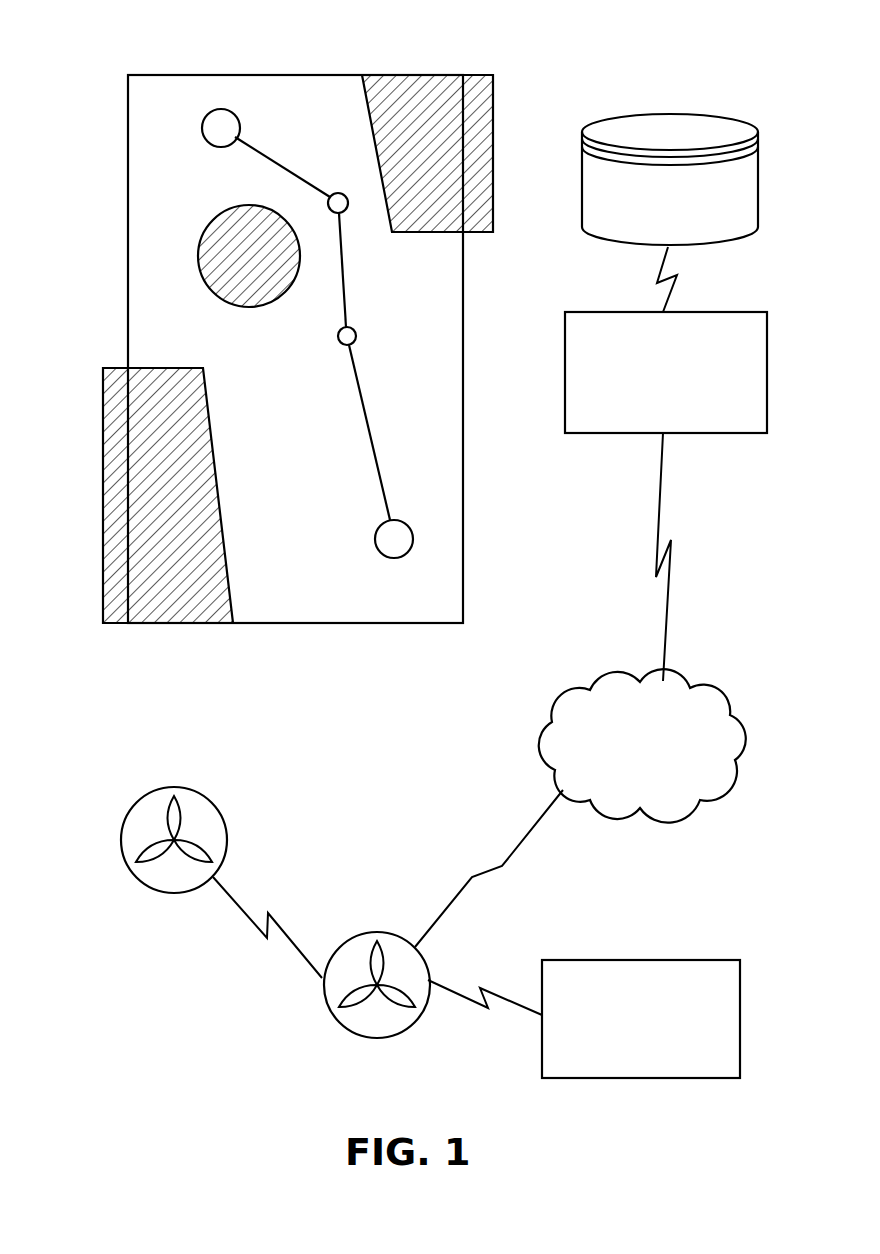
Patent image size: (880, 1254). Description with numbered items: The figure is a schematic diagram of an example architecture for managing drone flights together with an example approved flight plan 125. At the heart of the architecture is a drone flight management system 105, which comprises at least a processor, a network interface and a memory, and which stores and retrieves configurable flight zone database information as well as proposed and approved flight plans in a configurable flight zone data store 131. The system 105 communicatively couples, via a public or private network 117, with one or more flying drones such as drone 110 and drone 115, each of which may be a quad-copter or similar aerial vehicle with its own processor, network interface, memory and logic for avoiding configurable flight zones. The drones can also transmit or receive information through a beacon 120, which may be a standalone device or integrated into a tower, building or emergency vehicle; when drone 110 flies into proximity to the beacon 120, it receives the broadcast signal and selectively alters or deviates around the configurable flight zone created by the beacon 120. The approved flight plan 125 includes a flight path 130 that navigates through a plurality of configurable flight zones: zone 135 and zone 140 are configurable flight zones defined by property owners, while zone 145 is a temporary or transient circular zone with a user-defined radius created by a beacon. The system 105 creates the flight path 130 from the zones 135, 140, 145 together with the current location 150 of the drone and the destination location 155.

The drone flight management system 105 is at (666, 372).
The drone 110 is at (373, 932).
The drone 115 is at (132, 805).
The network 117 is at (642, 745).
The beacon 120 is at (641, 1019).
The approved flight plan 125 is at (297, 74).
The flight path 130 is at (368, 437).
The configurable flight zone data store 131 is at (670, 179).
The zone 135 is at (428, 116).
The zone 140 is at (167, 495).
The zone 145 is at (210, 260).
The current location 150 is at (412, 530).
The destination location 155 is at (207, 123).